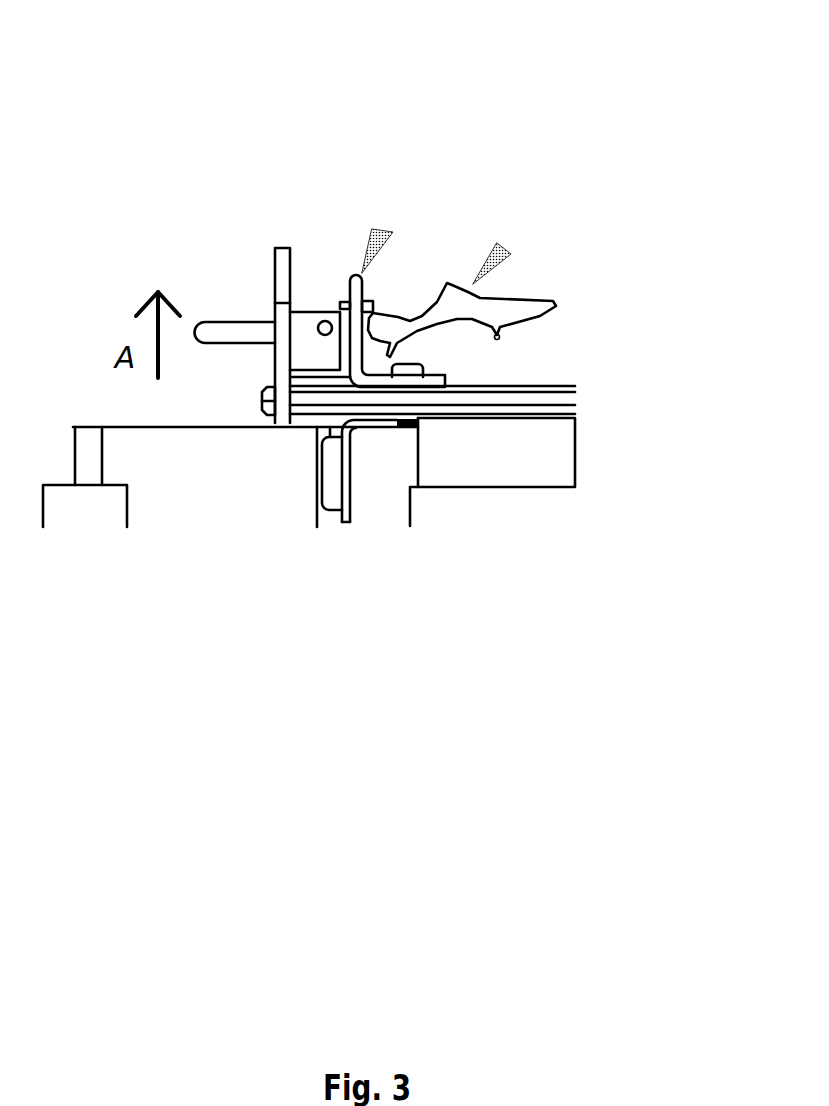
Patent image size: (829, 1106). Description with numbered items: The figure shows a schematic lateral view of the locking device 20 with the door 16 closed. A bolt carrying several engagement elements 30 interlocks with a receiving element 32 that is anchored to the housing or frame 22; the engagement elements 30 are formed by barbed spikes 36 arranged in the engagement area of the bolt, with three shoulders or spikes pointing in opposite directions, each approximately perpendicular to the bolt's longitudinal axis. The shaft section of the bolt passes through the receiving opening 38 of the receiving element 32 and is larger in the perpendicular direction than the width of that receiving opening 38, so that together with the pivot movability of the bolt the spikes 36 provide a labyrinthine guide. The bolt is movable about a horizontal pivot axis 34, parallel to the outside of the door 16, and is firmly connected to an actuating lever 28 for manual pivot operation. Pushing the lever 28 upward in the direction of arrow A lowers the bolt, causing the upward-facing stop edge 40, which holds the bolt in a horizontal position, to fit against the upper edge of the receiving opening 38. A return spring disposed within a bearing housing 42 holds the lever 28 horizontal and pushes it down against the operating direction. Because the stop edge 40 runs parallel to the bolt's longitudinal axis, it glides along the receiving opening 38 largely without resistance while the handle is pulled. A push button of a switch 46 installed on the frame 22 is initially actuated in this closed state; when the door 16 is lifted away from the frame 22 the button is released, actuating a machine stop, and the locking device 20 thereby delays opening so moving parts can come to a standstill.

The locking device 20 is at (90, 140).
The actuating lever 28 is at (212, 332).
The pivot axis 34 is at (318, 318).
The receiving element 32 is at (392, 226).
The engagement elements 30 is at (507, 245).
The stop edge 40 is at (373, 305).
The barbed spikes 36 is at (502, 338).
The receiving opening 38 is at (395, 368).
The frame 22 is at (519, 461).
The door 16 is at (287, 513).
The bearing housing 42 is at (317, 358).
The switch 46 is at (330, 503).